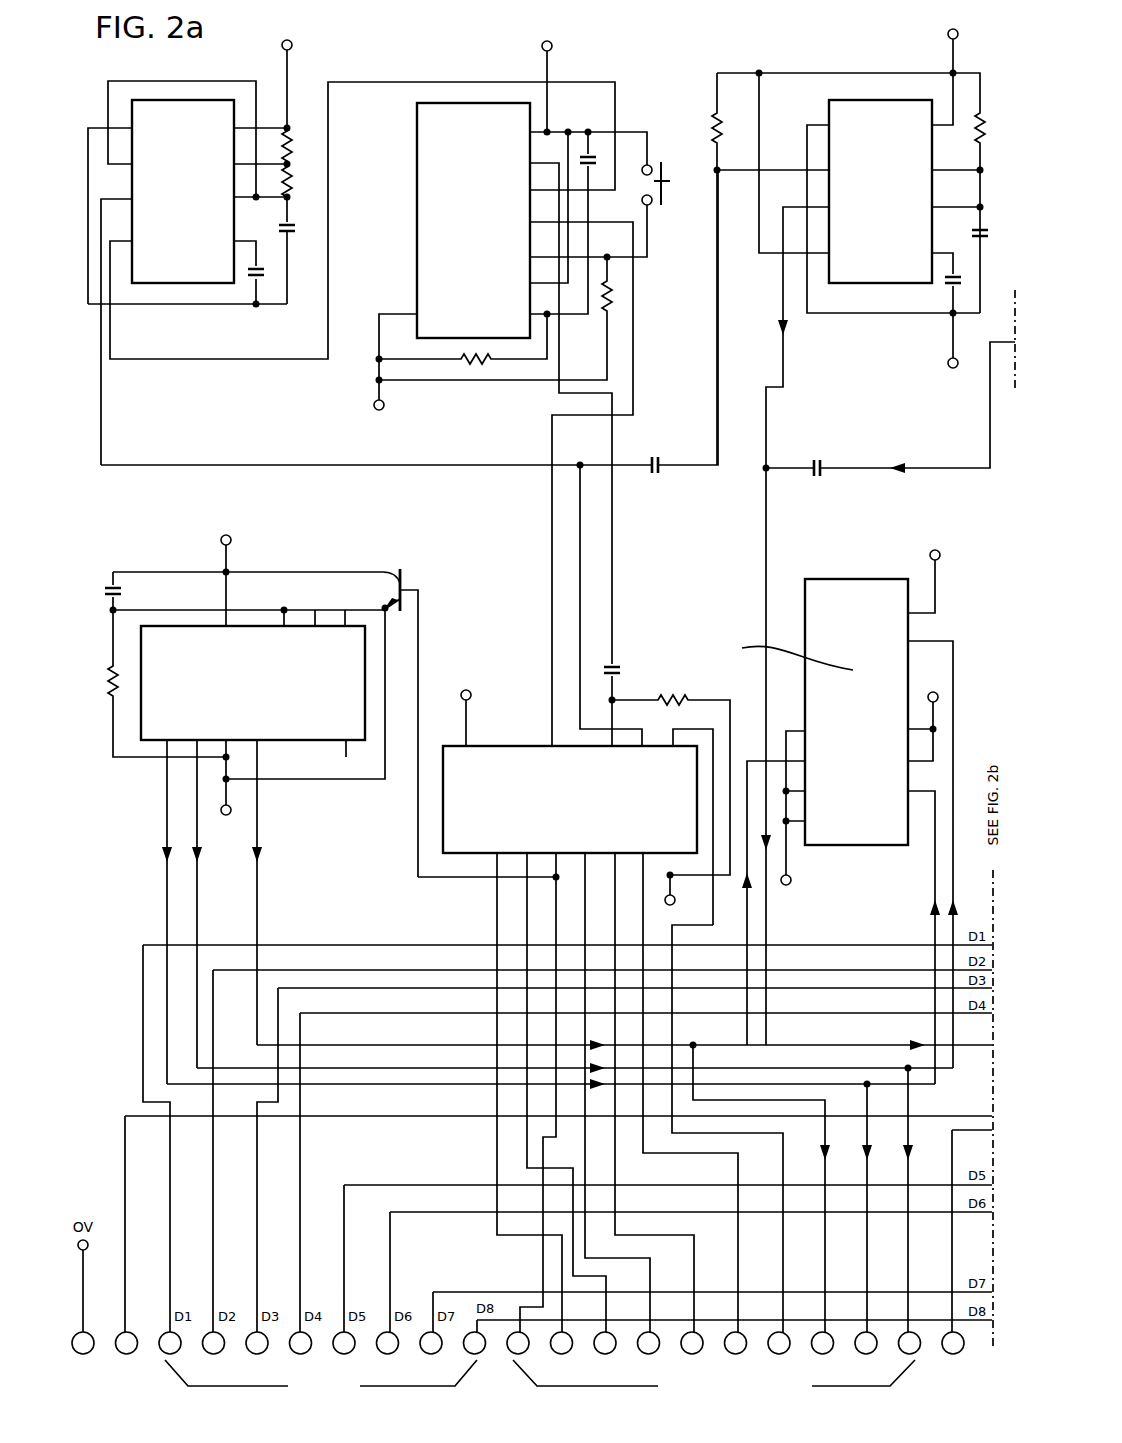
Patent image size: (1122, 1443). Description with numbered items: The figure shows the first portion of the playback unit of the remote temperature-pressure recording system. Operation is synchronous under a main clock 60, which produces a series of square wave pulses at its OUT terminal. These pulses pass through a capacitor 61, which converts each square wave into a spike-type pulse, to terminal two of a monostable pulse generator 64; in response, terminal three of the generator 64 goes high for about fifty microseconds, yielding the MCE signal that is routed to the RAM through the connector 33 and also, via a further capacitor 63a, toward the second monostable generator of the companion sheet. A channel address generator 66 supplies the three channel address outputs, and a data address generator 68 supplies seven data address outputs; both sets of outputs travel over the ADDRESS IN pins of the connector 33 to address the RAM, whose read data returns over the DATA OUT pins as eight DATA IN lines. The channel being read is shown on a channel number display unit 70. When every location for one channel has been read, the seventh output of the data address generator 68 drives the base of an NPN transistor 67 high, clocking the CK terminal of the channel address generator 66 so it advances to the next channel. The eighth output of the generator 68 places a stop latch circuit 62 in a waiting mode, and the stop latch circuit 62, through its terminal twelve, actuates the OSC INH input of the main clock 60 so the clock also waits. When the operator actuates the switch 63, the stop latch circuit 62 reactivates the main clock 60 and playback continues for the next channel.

The connector 33 is at (531, 1387).
The main clock 60 is at (165, 283).
The capacitor 61 is at (659, 472).
The stop latch circuit 62 is at (417, 223).
The switch 63 is at (663, 195).
The capacitor 63a is at (821, 475).
The monostable pulse generator 64 is at (829, 151).
The channel address generator 66 is at (293, 740).
The NPN transistor 67 is at (402, 580).
The data address generator 68 is at (470, 853).
The channel number display unit 70 is at (845, 845).